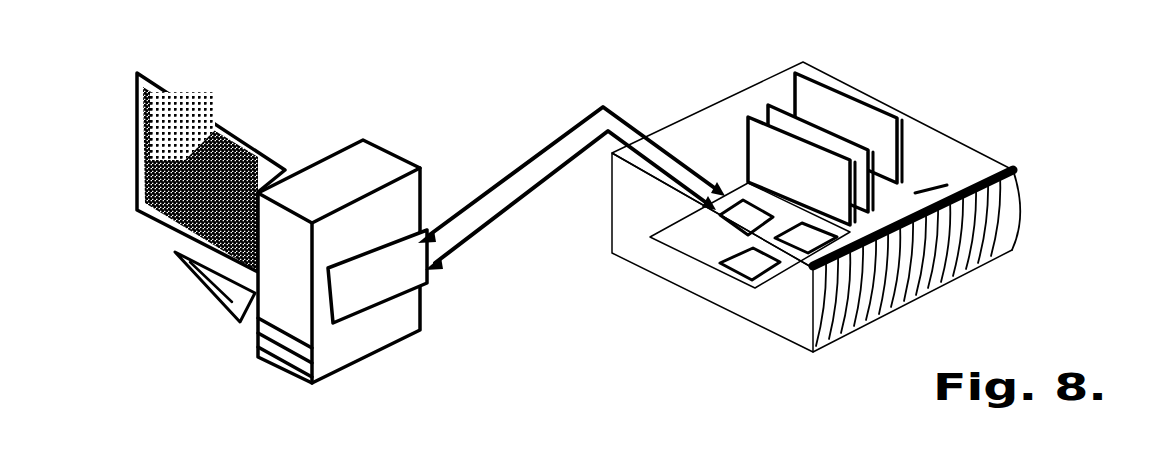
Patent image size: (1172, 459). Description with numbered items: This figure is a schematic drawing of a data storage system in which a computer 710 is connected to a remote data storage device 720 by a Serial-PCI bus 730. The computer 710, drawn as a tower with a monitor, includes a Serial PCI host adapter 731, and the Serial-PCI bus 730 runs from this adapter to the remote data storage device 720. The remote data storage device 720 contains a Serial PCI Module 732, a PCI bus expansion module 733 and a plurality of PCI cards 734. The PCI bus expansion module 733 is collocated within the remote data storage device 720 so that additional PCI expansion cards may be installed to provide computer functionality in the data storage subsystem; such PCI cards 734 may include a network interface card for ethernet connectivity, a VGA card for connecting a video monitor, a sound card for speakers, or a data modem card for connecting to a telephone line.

The computer 710 is at (350, 167).
The remote data storage device 720 is at (1017, 237).
The Serial-PCI bus 730 is at (540, 152).
The Serial PCI host adapter 731 is at (370, 292).
The Serial PCI Module 732 is at (740, 274).
The PCI bus expansion module 733 is at (943, 183).
The PCI cards 734 is at (807, 110).